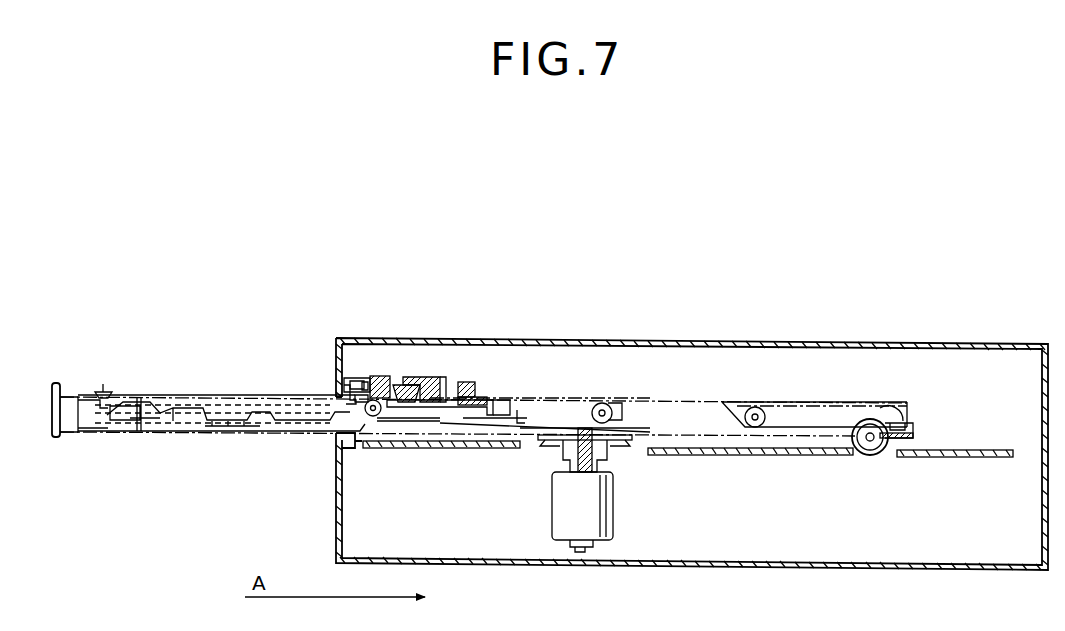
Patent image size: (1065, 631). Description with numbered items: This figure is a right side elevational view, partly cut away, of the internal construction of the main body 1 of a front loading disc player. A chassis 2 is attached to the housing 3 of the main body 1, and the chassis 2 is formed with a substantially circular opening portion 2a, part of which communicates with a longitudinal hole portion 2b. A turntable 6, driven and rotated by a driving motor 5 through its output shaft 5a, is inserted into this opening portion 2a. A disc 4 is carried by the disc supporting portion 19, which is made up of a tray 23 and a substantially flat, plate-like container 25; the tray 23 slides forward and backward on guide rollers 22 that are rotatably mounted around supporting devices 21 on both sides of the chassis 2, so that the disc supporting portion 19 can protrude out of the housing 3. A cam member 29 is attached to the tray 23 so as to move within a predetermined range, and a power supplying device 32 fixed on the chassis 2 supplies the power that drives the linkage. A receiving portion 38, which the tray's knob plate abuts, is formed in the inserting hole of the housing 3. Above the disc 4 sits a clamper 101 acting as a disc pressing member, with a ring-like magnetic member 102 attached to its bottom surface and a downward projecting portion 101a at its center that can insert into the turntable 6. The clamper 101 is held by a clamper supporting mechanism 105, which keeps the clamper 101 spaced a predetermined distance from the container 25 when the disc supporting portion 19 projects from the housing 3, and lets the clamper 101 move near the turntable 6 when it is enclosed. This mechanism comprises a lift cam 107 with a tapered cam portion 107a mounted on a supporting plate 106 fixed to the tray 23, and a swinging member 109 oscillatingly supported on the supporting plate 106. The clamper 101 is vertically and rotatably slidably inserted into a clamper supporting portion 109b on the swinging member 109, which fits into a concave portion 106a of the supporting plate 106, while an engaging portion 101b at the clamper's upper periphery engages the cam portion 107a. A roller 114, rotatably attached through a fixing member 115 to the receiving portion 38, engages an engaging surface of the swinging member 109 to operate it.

The main body 1 is at (626, 276).
The chassis 2 is at (960, 460).
The opening portion 2a is at (522, 432).
The longitudinal hole portion 2b is at (667, 454).
The housing 3 is at (752, 336).
The disc 4 is at (255, 417).
The driving motor 5 is at (560, 545).
The output shaft 5a is at (586, 470).
The turntable 6 is at (555, 456).
The disc supporting portion 19 is at (197, 438).
The supporting devices 21 is at (366, 426).
The guide rollers 22 is at (398, 428).
The tray 23 is at (206, 393).
The container 25 is at (229, 403).
The cam member 29 is at (153, 432).
The power supplying device 32 is at (912, 423).
The receiving portion 38 is at (346, 388).
The clamper 101 is at (432, 400).
The projecting portion 101a is at (420, 430).
The engaging portion 101b is at (443, 378).
The magnetic member 102 is at (453, 420).
The clamper supporting mechanism 105 is at (465, 397).
The supporting plate 106 is at (500, 400).
The concave portion 106a is at (516, 415).
The lift cam 107 is at (470, 382).
The cam portion 107a is at (416, 377).
The swinging member 109 is at (378, 376).
The clamper supporting portion 109b is at (400, 384).
The roller 114 is at (362, 378).
The fixing member 115 is at (340, 376).